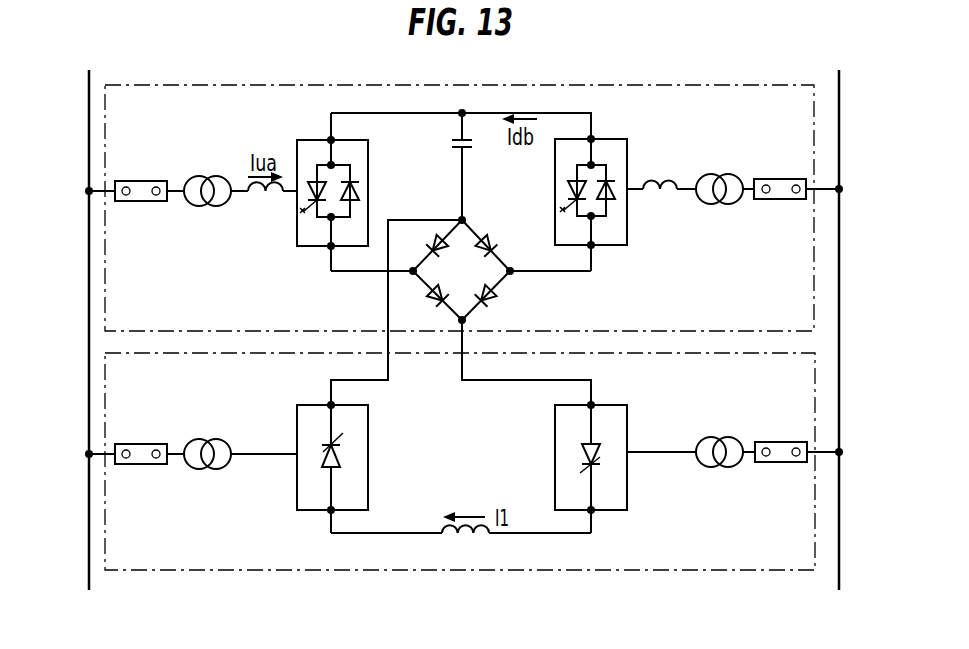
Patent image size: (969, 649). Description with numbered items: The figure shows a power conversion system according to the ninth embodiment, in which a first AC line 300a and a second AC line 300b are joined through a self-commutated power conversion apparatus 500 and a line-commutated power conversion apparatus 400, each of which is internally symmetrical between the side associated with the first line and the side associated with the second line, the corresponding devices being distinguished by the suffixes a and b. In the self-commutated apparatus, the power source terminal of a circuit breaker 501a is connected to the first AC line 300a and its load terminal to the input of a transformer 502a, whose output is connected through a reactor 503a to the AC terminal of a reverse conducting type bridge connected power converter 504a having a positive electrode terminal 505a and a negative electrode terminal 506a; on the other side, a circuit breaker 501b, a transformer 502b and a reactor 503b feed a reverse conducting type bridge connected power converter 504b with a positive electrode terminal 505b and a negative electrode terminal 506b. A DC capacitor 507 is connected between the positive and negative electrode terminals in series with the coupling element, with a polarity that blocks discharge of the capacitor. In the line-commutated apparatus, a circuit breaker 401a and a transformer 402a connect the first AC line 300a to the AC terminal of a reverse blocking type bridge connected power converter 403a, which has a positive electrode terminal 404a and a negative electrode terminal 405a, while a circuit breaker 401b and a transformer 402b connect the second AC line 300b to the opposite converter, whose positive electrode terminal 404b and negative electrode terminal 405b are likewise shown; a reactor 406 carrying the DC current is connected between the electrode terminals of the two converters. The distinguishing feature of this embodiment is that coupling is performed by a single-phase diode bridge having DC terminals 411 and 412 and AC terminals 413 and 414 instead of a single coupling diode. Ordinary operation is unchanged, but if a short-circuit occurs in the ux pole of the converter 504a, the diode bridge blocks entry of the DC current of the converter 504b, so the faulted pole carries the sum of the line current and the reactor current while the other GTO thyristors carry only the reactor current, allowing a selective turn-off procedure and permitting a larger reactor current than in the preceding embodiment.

The first AC line 300a is at (89, 96).
The second AC line 300b is at (839, 80).
The self-commutated power conversion apparatus 500 is at (701, 62).
The line-commutated power conversion apparatus 400 is at (606, 570).
The circuit breaker 501a is at (146, 170).
The transformer 502a is at (206, 170).
The reactor 503a is at (258, 196).
The reverse conducting type bridge connected power converter 504a is at (368, 158).
The positive electrode terminal 505a is at (331, 140).
The negative electrode terminal 506a is at (331, 246).
The DC capacitor 507 is at (473, 147).
The circuit breaker 501b is at (780, 179).
The transformer 502b is at (714, 175).
The reactor 503b is at (657, 181).
The reverse conducting type bridge connected power converter 504b is at (627, 230).
The positive electrode terminal 505b is at (591, 139).
The negative electrode terminal 506b is at (591, 245).
The DC terminal 411 is at (466, 319).
The DC terminal 412 is at (462, 220).
The AC terminal 413 is at (413, 271).
The AC terminal 414 is at (510, 272).
The circuit breaker 401a is at (140, 444).
The transformer 402a is at (202, 440).
The reverse blocking type bridge connected power converter 403a is at (297, 483).
The positive electrode terminal 404a is at (331, 405).
The negative electrode terminal 405a is at (331, 510).
The reactor 406 is at (462, 534).
The circuit breaker 401b is at (780, 442).
The transformer 402b is at (714, 438).
The positive electrode terminal 404b is at (591, 510).
The negative electrode terminal 405b is at (591, 405).